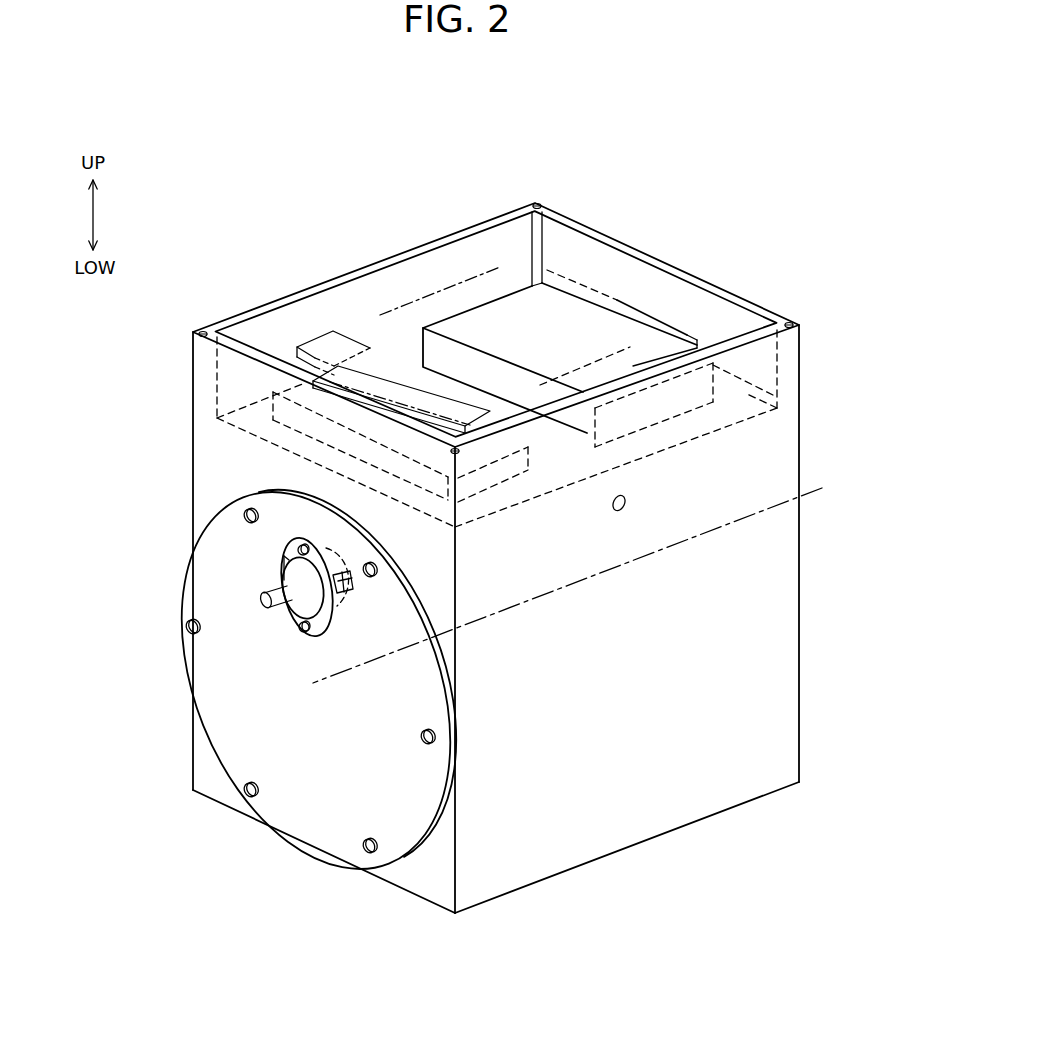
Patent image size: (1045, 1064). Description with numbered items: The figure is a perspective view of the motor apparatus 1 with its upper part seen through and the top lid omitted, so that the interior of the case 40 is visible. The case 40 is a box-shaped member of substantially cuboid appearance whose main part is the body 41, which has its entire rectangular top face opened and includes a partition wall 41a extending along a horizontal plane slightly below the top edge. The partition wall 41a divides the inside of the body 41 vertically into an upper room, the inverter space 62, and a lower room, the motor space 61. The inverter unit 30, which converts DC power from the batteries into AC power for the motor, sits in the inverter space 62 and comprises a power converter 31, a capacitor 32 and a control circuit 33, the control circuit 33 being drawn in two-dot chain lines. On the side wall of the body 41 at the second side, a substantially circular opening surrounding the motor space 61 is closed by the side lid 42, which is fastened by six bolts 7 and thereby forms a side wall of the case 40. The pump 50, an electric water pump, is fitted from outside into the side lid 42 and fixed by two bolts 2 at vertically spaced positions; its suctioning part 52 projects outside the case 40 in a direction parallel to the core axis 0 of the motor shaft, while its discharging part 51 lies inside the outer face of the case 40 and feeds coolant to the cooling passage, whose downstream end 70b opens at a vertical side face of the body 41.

The motor apparatus 1 is at (576, 185).
The core axis 0 is at (578, 576).
The bolts 2 is at (301, 547).
The bolts 7 is at (243, 790).
The inverter unit 30 is at (265, 197).
The power converter 31 is at (365, 398).
The capacitor 32 is at (460, 332).
The control circuit 33 is at (330, 337).
The case 40 is at (804, 442).
The body 41 is at (763, 600).
The partition wall 41a is at (448, 397).
The side lid 42 is at (325, 835).
The pump 50 is at (262, 616).
The discharging part 51 is at (338, 595).
The suctioning part 52 is at (268, 598).
The motor space 61 is at (618, 712).
The inverter space 62 is at (495, 246).
The downstream end 70b is at (623, 508).